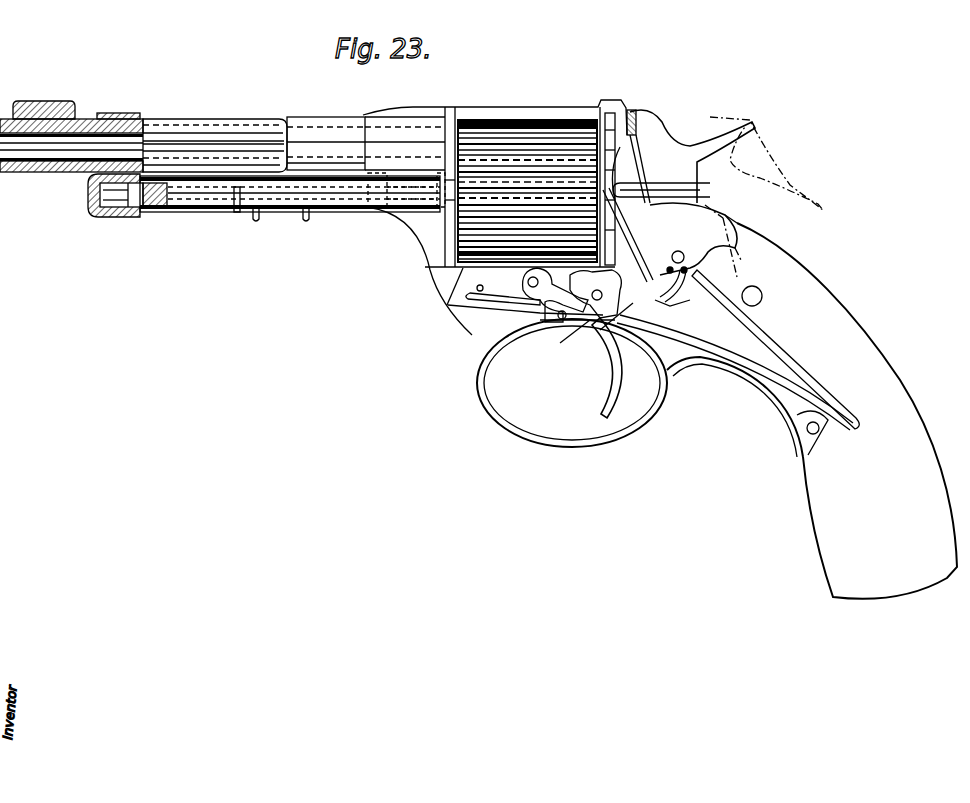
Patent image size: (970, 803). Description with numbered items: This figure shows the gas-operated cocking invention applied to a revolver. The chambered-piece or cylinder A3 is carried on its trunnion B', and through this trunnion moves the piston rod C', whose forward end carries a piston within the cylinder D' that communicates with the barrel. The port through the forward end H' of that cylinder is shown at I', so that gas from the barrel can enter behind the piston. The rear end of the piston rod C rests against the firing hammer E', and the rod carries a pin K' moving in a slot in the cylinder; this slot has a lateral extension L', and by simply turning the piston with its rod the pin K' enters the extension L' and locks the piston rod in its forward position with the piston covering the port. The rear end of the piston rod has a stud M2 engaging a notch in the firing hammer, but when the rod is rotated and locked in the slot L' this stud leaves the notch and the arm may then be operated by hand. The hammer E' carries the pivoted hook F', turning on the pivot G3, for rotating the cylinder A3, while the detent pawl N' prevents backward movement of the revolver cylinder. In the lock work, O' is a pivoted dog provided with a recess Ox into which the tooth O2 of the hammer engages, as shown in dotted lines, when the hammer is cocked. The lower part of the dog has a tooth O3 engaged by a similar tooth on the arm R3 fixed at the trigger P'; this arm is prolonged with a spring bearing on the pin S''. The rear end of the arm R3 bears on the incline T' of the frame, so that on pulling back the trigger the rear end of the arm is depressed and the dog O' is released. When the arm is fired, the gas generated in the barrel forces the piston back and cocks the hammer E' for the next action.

The port I' is at (71, 180).
The forward end of the cylinder H' is at (91, 198).
The cylinder D' is at (121, 217).
The piston rod C is at (155, 215).
The lateral extension of the slot L' is at (231, 219).
The pin K' is at (290, 210).
The lug C'' is at (402, 215).
The trunnion B' is at (435, 206).
The chambered-piece or cylinder A3 is at (527, 191).
The piston rod C' is at (626, 189).
The detent pawl N' is at (641, 105).
The firing hammer E' is at (717, 193).
The stud M2 is at (661, 200).
The pivoted hook F' is at (628, 235).
The pivot G3 is at (668, 307).
The pin S'' is at (503, 290).
The arm R3 is at (577, 320).
The recess Ox is at (591, 294).
The pivoted dog O' is at (603, 288).
The tooth O3 is at (560, 343).
The tooth of the hammer O2 is at (600, 330).
The trigger P' is at (604, 368).
The incline of the frame T' is at (735, 372).